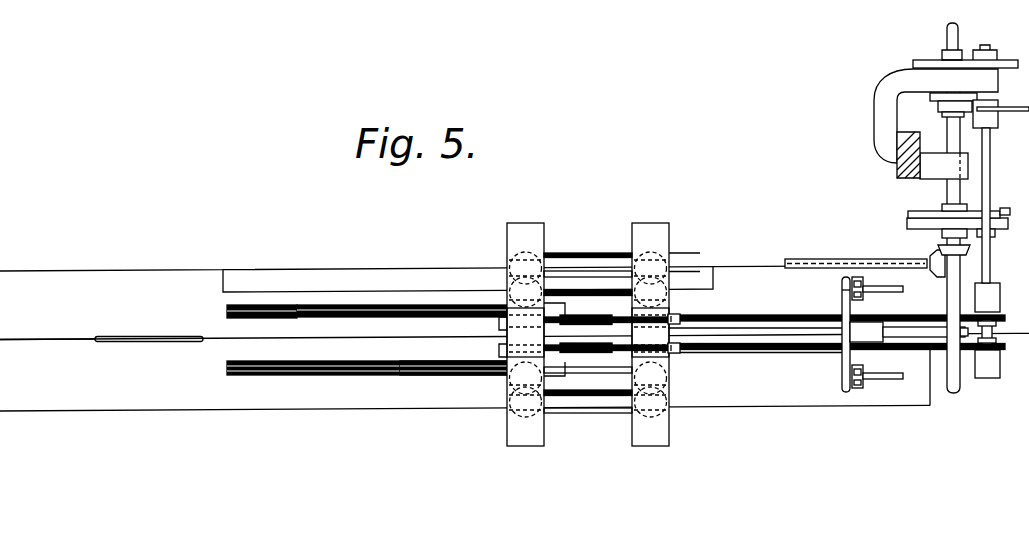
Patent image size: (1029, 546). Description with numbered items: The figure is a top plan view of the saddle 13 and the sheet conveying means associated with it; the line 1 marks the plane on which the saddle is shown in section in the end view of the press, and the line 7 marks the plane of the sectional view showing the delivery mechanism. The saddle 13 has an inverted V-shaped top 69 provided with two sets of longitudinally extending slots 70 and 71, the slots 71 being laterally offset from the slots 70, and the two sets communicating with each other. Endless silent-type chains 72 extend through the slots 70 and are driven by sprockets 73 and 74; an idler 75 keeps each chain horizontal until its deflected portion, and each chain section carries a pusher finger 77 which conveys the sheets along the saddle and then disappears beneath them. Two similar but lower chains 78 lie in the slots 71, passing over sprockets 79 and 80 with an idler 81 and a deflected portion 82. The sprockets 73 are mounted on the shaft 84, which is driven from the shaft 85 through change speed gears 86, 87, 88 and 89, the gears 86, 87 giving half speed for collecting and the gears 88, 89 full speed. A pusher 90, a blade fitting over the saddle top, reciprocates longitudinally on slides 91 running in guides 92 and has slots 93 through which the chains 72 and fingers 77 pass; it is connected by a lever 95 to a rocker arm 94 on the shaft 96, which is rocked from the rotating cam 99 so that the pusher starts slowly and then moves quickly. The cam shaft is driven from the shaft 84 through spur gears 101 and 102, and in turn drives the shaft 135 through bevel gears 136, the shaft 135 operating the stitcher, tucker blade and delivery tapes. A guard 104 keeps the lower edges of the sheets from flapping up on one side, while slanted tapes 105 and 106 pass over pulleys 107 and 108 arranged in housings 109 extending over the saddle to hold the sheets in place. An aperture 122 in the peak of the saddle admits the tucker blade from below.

The section line 1 is at (210, 440).
The section line 7 is at (254, 0).
The saddle 13 is at (514, 325).
The inverted V-shaped top 69 is at (47, 329).
The slots 70 is at (836, 335).
The slots 71 is at (405, 362).
The chains 72 is at (721, 318).
The sprockets 73 is at (1008, 291).
The sprockets 74 is at (506, 338).
The idler 75 is at (575, 318).
The pusher finger 77 is at (681, 350).
The chains 78 is at (355, 362).
The sprockets 79 is at (512, 300).
The sprockets 80 is at (245, 305).
The idler 81 is at (295, 306).
The deflected portion 82 is at (265, 305).
The shaft 84 is at (990, 165).
The shaft 85 is at (957, 36).
The half speed gear 86 is at (998, 112).
The half speed gear 87 is at (939, 104).
The full speed gear 88 is at (990, 60).
The full speed gear 89 is at (922, 69).
The pusher 90 is at (843, 288).
The slides 91 is at (897, 293).
The guides 92 is at (858, 277).
The slots 93 is at (843, 307).
The rocker arm 94 is at (962, 337).
The lever 95 is at (905, 330).
The shaft 96 is at (954, 394).
The cam 99 is at (912, 211).
The spur gear 101 is at (906, 214).
The spur gear 102 is at (907, 227).
The guard 104 is at (404, 291).
The tapes 105 is at (614, 382).
The tapes 106 is at (581, 294).
The pulleys 107 is at (513, 262).
The pulleys 108 is at (660, 262).
The housings 109 is at (527, 223).
The aperture 122 is at (142, 336).
The shaft 135 is at (800, 259).
The bevel gears 136 is at (931, 254).